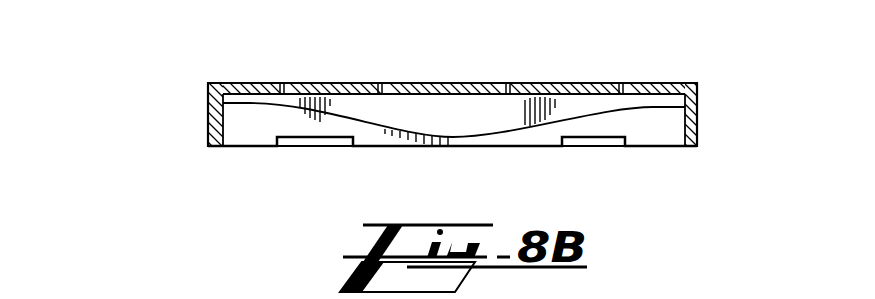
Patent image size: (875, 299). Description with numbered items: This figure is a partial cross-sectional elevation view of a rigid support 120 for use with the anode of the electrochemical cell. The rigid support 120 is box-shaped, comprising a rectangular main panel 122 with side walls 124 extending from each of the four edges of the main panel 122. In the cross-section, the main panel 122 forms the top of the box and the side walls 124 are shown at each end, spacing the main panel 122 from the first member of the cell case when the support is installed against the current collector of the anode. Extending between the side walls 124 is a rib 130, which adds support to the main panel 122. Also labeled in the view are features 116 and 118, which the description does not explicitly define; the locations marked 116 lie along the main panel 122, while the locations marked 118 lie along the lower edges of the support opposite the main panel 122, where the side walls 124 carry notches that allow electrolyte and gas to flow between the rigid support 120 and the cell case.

The ribs / partition walls 116 is at (282, 83).
The mounting recesses in base 118 is at (310, 138).
The rigid support 120 is at (690, 55).
The main panel 122 is at (461, 83).
The side walls 124 is at (208, 120).
The ribs 130 is at (453, 137).